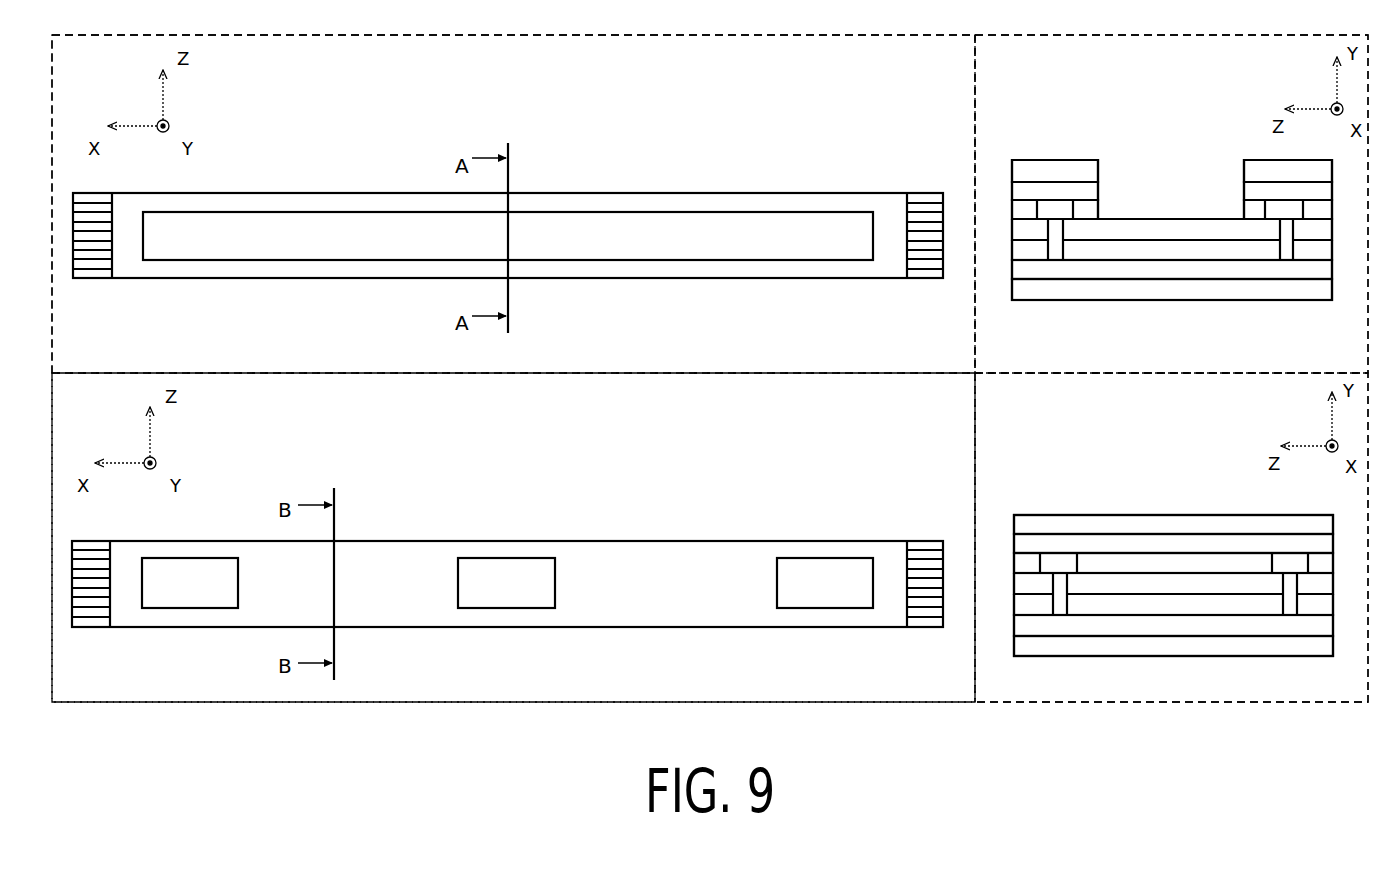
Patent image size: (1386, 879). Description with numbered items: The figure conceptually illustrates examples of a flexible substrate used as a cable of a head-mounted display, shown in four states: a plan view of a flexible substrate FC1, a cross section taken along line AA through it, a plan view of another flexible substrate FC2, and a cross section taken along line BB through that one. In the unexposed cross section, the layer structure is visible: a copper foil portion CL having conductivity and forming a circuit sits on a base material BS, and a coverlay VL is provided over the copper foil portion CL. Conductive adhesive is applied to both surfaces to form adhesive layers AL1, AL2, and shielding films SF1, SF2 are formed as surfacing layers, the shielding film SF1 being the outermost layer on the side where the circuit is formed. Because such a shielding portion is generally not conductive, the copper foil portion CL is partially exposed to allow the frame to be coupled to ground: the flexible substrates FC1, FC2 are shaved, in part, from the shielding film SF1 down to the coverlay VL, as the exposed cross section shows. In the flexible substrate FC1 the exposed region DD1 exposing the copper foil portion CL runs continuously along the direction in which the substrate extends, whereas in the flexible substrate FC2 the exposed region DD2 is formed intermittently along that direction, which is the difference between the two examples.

The flexible substrate FC1 is at (649, 203).
The flexible substrate FC2 is at (717, 553).
The exposed region DD1 is at (735, 223).
The exposed region DD2 is at (193, 570).
The shielding film SF1 is at (1078, 172).
The adhesive layer AL1 is at (1040, 192).
The coverlay VL is at (1253, 208).
The copper foil portion CL is at (1205, 232).
The base material BS is at (1237, 253).
The adhesive layer AL2 is at (1105, 272).
The shielding film SF2 is at (1177, 293).